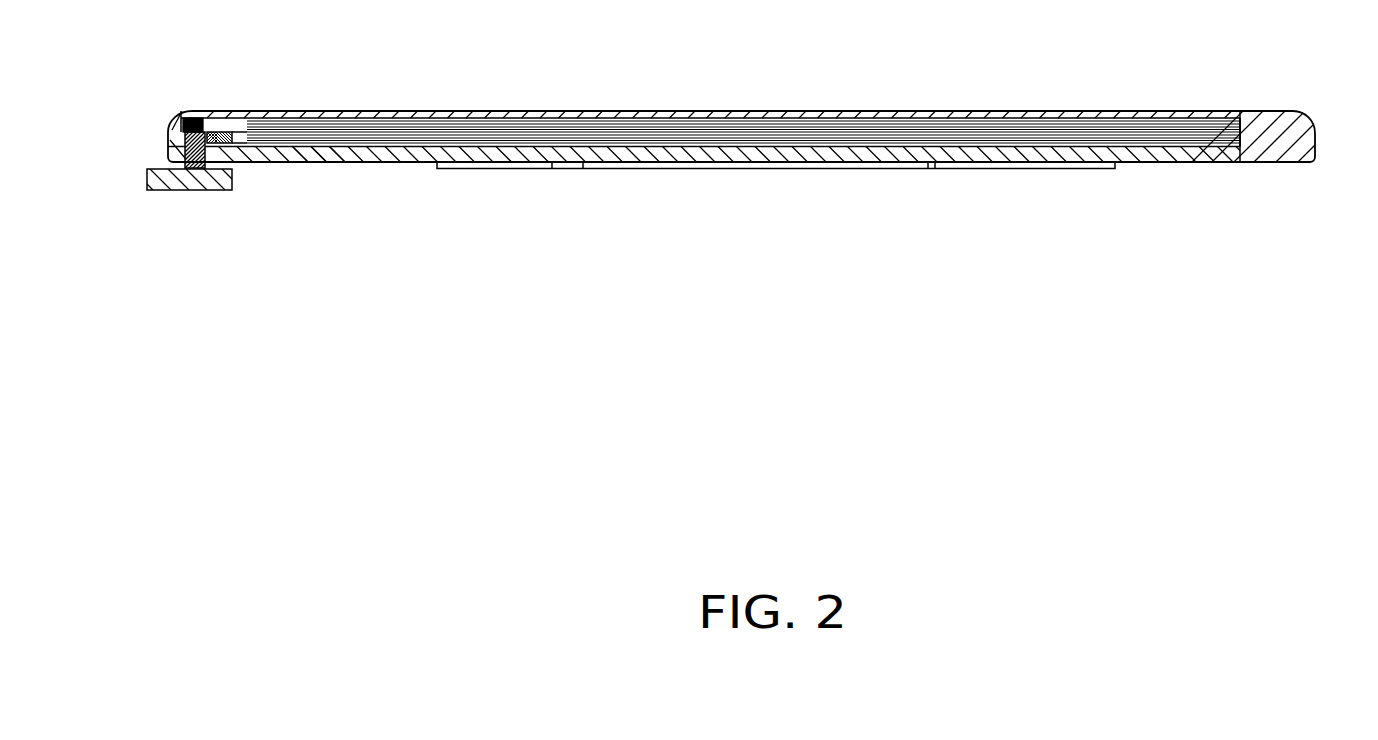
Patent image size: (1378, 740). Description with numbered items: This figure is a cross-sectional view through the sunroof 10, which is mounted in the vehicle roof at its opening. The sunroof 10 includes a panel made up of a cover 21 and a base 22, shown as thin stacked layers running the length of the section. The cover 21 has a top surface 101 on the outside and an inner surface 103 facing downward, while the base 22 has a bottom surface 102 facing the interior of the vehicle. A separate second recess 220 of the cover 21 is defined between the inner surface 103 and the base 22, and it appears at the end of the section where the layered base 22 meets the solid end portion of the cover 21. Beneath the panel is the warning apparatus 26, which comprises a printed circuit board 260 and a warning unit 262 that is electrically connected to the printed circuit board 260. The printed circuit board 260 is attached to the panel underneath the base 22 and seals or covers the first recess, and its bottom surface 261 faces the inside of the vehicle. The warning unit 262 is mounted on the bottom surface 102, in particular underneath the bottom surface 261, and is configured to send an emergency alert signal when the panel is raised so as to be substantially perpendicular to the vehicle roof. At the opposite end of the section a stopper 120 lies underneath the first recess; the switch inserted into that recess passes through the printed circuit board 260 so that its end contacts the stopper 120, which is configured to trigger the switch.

The sunroof 10 is at (780, 74).
The top surface 101 is at (1013, 108).
The bottom surface 102 is at (1208, 162).
The inner surface 103 is at (1221, 110).
The cover 21 is at (1287, 118).
The base 22 is at (1177, 143).
The second recess 220 is at (1243, 130).
The warning apparatus 26 is at (730, 221).
The printed circuit board 260 is at (413, 153).
The bottom surface 261 is at (315, 166).
The warning unit 262 is at (776, 204).
The stopper 120 is at (185, 183).